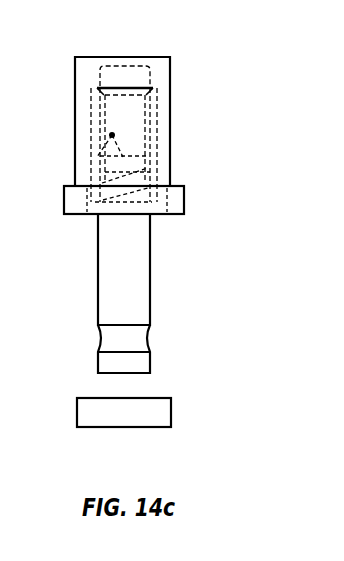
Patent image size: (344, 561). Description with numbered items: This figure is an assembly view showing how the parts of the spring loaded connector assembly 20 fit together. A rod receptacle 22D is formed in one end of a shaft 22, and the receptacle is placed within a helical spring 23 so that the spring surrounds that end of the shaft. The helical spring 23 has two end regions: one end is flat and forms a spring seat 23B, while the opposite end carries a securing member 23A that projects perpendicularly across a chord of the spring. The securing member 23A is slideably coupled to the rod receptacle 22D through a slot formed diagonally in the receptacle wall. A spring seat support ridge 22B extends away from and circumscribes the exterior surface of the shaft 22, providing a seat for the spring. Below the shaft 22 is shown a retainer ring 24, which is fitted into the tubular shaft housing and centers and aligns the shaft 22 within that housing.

The spring loaded connector assembly 20 is at (200, 266).
The shaft 22 is at (117, 282).
The spring seat support ridge 22B is at (97, 210).
The rod receptacle 22D is at (130, 122).
The helical spring 23 is at (128, 174).
The securing member 23A is at (108, 138).
The spring seat 23B is at (150, 202).
The retainer ring 24 is at (117, 417).